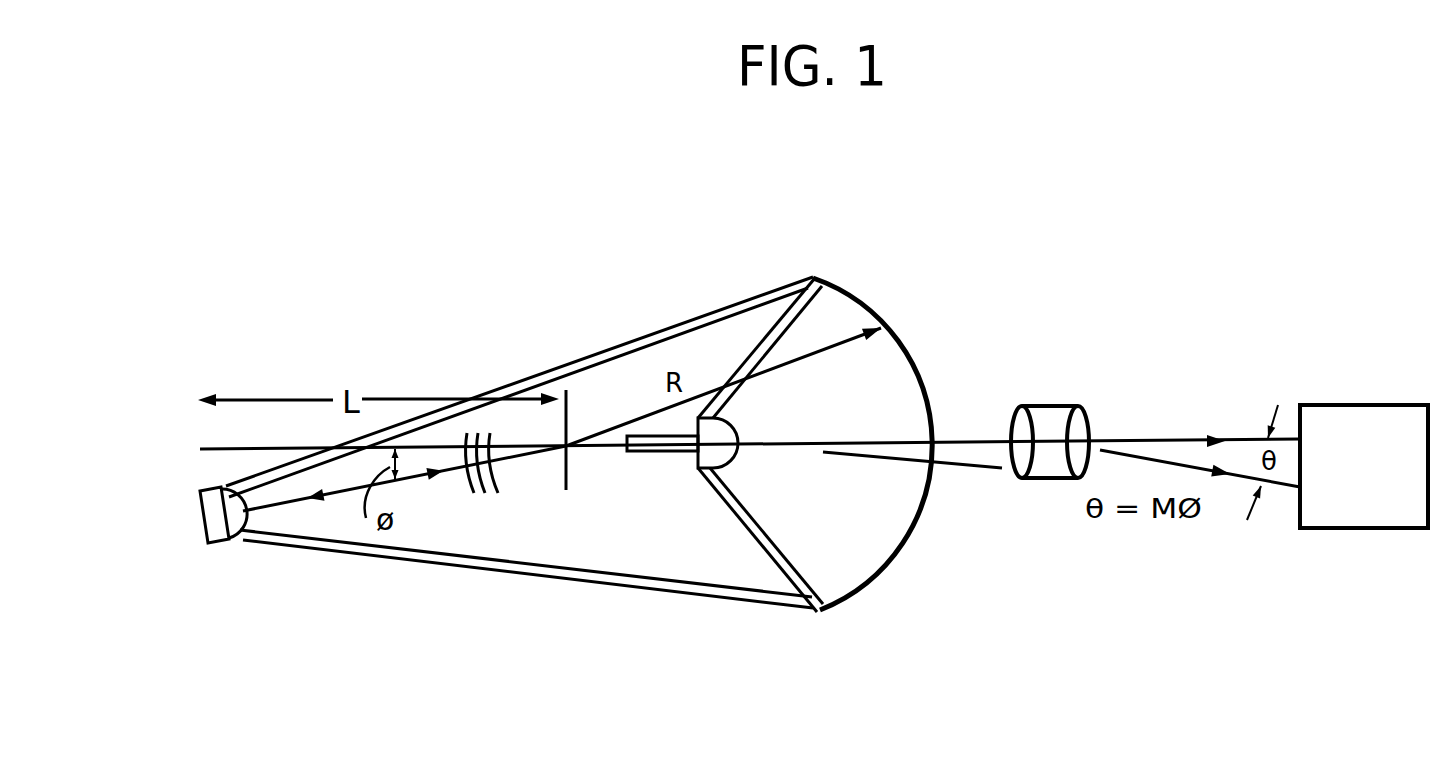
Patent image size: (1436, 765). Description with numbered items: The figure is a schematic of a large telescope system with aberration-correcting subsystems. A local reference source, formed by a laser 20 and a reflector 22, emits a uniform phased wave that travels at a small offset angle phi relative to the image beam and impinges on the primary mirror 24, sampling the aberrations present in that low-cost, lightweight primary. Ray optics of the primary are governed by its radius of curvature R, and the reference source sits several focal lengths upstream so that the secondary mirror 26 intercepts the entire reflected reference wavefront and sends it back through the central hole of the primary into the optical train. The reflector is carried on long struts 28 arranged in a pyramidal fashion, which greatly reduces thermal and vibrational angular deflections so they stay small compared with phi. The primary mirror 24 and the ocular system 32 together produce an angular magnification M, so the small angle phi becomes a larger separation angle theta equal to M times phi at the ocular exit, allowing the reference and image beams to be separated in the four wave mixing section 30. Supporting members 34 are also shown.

The laser 20 is at (620, 457).
The reflector 22 is at (248, 522).
The primary mirror 24 is at (840, 287).
The secondary mirror 26 is at (737, 456).
The struts 28 is at (680, 597).
The four wave mixing section 30 is at (1323, 405).
The ocular system 32 is at (1050, 403).
The strut 34 is at (720, 505).